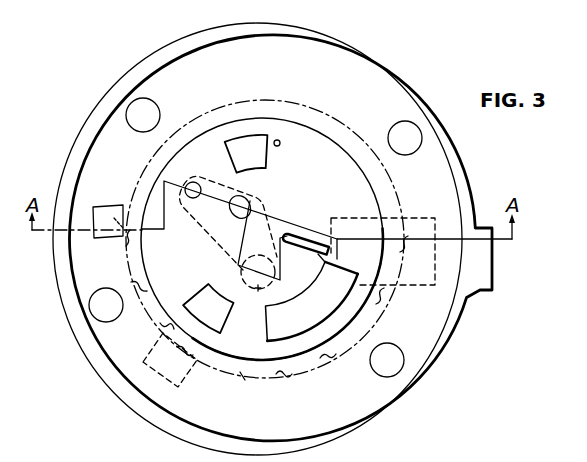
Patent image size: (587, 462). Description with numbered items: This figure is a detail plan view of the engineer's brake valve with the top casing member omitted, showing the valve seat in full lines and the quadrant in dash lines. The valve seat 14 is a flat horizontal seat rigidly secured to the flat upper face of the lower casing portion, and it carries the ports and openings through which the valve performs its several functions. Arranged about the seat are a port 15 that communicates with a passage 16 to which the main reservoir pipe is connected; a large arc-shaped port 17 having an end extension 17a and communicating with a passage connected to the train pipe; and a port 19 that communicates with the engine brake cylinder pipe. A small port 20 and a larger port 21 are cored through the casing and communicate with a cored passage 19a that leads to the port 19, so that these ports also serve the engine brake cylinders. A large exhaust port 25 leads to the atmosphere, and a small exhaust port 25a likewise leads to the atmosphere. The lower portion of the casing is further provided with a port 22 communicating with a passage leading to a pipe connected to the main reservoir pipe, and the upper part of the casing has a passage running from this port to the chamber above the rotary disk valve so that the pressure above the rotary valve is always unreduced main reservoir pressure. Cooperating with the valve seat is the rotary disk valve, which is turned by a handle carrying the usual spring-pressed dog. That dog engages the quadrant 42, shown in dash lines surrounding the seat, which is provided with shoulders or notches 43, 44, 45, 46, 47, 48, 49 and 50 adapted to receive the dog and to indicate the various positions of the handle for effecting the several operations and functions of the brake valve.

The valve seat 14 is at (258, 116).
The port 15 is at (208, 308).
The passage 16 is at (170, 370).
The arc-shaped port 17 is at (312, 301).
The end extension 17a is at (295, 238).
The port 19 is at (257, 289).
The cored passage 19a is at (215, 241).
The small port 20 is at (196, 183).
The larger port 21 is at (251, 204).
The port 22 is at (100, 213).
The exhaust port 25 is at (246, 154).
The small exhaust port 25a is at (281, 142).
The quadrant 42 is at (243, 376).
The notch 43 is at (126, 240).
The notch 44 is at (131, 283).
The notch 45 is at (164, 327).
The notch 46 is at (183, 351).
The notch 47 is at (283, 373).
The notch 48 is at (328, 357).
The notch 49 is at (380, 300).
The notch 50 is at (403, 246).